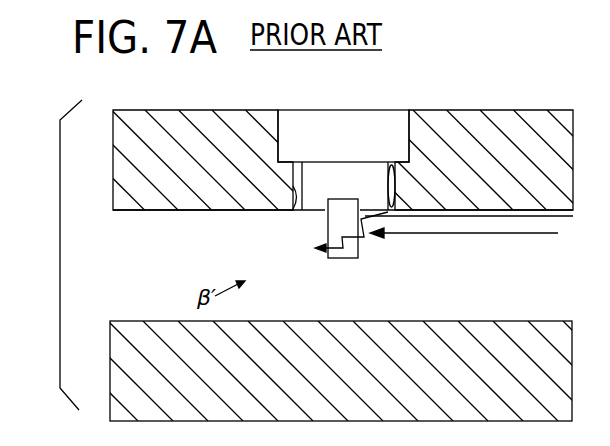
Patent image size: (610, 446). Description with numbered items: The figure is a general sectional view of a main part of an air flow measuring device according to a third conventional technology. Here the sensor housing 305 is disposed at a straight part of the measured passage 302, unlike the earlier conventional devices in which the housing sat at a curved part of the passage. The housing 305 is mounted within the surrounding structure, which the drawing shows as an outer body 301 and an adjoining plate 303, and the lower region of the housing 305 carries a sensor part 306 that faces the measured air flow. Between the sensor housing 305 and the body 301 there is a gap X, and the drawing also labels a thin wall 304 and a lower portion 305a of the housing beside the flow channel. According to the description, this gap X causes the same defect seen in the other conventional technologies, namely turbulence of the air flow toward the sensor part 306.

The nozzle body 301 is at (514, 97).
The measured passage 302 is at (519, 299).
The plate 303 is at (223, 133).
The thin wall 304 is at (295, 210).
The sensor housing 305 is at (305, 127).
The lower surface of block 305a is at (315, 210).
The sensor part 306 is at (347, 242).
The gap X is at (393, 185).